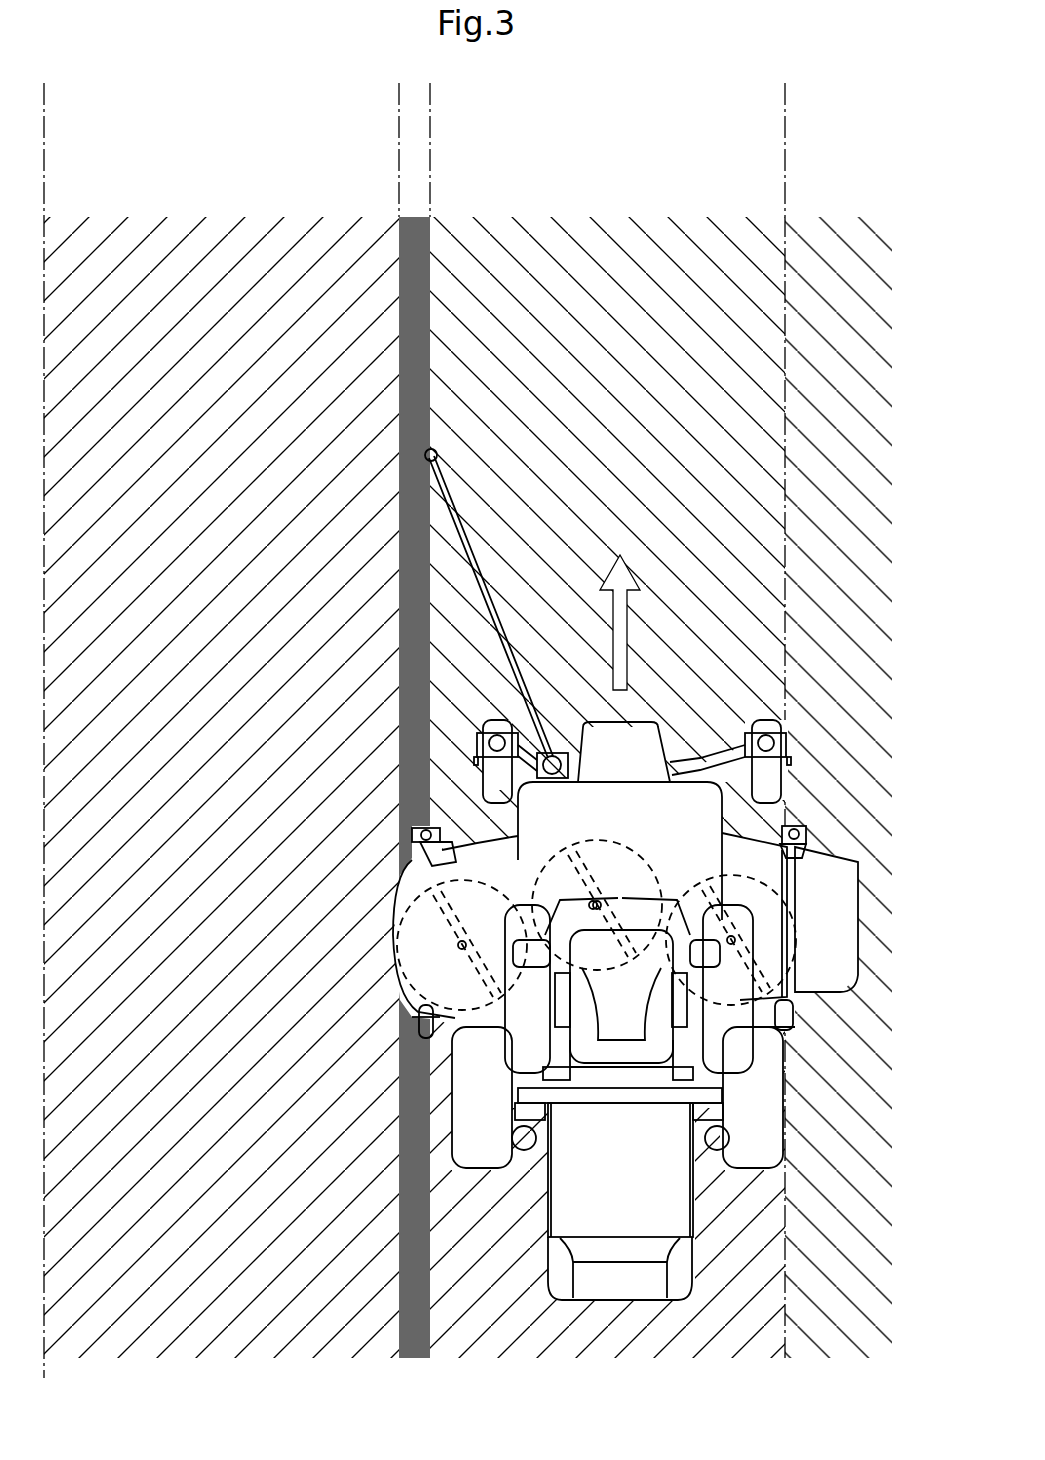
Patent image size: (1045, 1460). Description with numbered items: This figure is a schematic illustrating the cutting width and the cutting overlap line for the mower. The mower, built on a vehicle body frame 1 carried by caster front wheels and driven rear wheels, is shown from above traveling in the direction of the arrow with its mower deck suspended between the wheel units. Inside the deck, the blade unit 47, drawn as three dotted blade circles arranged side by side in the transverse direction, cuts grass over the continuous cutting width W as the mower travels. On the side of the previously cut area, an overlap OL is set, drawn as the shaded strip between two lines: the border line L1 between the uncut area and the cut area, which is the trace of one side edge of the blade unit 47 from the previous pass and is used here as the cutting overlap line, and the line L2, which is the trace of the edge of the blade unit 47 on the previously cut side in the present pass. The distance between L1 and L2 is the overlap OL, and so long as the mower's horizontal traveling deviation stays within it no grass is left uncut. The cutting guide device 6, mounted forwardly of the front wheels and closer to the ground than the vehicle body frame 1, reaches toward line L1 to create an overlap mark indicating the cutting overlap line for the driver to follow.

The vehicle body frame 1 is at (665, 1010).
The cutting guide device 6 is at (470, 547).
The blade unit 47 is at (639, 854).
The border line between uncut area and cut area L1 is at (430, 112).
The trace of the edge of the previously cut area side of the blade unit L2 is at (398, 112).
The overlap OL is at (418, 253).
The cutting width W is at (399, 146).